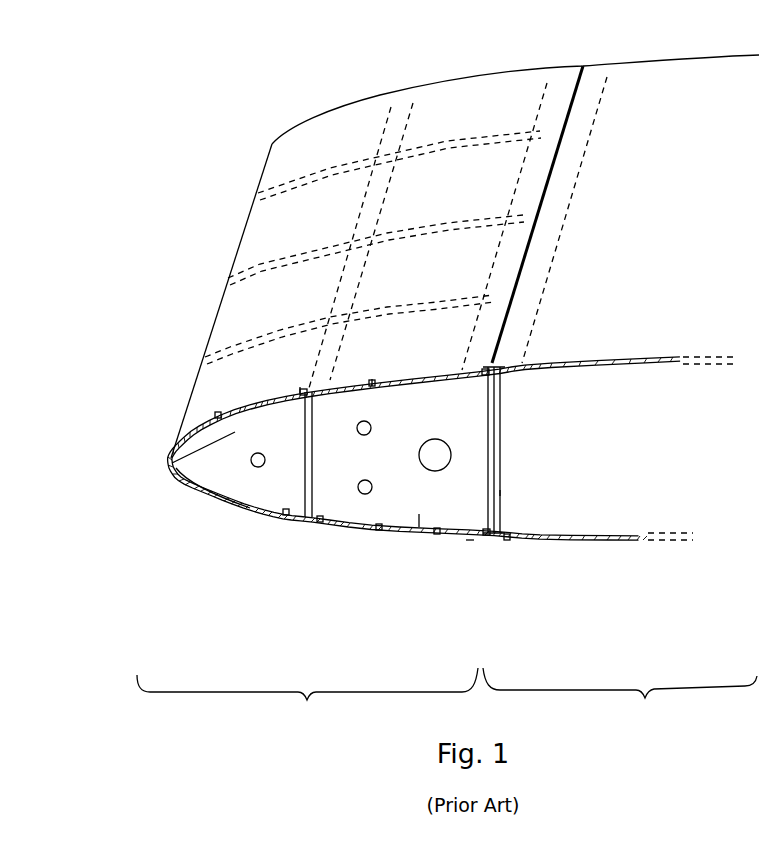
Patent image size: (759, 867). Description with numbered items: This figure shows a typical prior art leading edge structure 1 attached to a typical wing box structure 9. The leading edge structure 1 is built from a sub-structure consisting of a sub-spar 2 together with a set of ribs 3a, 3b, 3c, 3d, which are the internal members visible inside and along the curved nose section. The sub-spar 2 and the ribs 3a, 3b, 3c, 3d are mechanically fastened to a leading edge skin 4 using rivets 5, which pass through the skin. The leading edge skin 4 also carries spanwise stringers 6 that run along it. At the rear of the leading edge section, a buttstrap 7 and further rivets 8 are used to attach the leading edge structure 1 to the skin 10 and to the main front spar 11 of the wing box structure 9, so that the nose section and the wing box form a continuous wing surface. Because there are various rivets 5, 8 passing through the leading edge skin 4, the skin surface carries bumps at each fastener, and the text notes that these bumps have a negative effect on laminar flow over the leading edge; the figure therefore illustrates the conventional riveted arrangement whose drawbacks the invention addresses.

The leading edge structure 1 is at (307, 701).
The sub-spar 2 is at (262, 508).
The rib 3a is at (217, 491).
The rib 3b is at (227, 352).
The rib 3c is at (253, 272).
The rib 3d is at (449, 140).
The leading edge skin 4 is at (278, 153).
The rivets 5 is at (367, 537).
The spanwise stringers 6 is at (170, 463).
The buttstrap 7 is at (470, 540).
The further rivets 8 is at (508, 543).
The wing box structure 9 is at (620, 697).
The skin 10 is at (650, 365).
The main front spar 11 is at (500, 493).